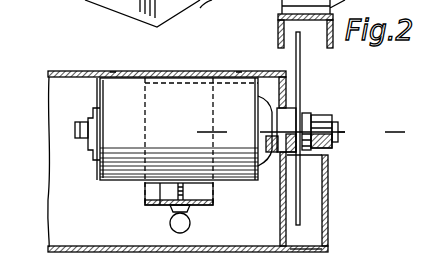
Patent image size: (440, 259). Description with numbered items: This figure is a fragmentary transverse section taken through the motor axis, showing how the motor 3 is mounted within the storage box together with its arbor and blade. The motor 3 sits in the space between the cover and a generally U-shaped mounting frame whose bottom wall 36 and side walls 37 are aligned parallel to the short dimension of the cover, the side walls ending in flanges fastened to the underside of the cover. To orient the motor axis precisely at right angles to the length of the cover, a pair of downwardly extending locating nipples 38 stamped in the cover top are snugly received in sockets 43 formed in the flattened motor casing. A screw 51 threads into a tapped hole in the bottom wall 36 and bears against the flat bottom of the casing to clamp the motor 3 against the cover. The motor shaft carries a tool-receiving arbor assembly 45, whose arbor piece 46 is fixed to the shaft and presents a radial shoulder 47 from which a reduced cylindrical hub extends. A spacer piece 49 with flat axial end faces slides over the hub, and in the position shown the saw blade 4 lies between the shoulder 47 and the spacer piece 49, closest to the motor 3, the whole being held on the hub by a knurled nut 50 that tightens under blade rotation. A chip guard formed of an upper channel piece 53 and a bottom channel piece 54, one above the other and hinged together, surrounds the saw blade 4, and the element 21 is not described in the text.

The motor 3 is at (128, 115).
The saw blade 4 is at (244, 141).
The casing 21 is at (68, 71).
The bottom wall 36 is at (155, 204).
The side walls 37 is at (146, 191).
The locating nipples 38 is at (114, 72).
The sockets 43 is at (95, 89).
The arbor assembly 45 is at (278, 160).
The arbor piece 46 is at (290, 110).
The radial shoulder 47 is at (318, 112).
The spacer piece 49 is at (348, 134).
The knurled nut 50 is at (320, 120).
The screw 51 is at (190, 224).
The upper channel piece 53 is at (279, 10).
The bottom channel piece 54 is at (336, 248).